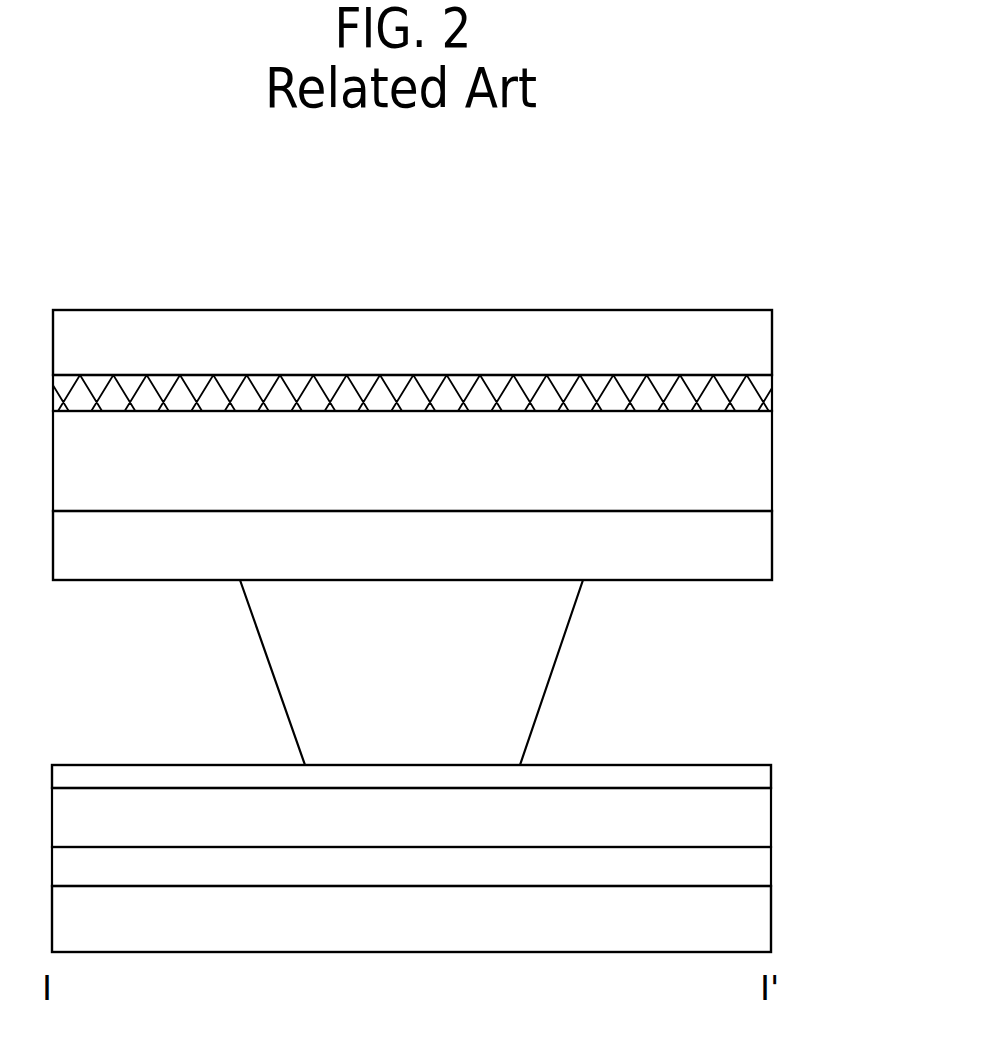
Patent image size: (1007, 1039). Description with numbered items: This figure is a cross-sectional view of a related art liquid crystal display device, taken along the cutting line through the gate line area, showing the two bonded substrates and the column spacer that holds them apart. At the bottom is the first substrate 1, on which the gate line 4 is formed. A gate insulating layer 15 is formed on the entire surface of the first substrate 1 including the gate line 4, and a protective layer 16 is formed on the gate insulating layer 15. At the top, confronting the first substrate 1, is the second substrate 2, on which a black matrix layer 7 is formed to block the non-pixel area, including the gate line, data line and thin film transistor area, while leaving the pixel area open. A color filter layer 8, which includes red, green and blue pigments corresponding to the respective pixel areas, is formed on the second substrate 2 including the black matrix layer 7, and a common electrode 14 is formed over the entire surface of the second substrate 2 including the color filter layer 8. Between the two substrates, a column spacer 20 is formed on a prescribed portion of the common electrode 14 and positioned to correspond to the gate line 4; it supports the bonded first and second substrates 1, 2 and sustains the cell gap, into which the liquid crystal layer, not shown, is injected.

The second substrate 2 is at (752, 351).
The black matrix layer 7 is at (752, 401).
The color filter layer 8 is at (752, 481).
The common electrode 14 is at (752, 546).
The column spacer 20 is at (537, 679).
The protective layer 16 is at (757, 783).
The gate insulating layer 15 is at (757, 829).
The gate line 4 is at (757, 871).
The first substrate 1 is at (757, 923).